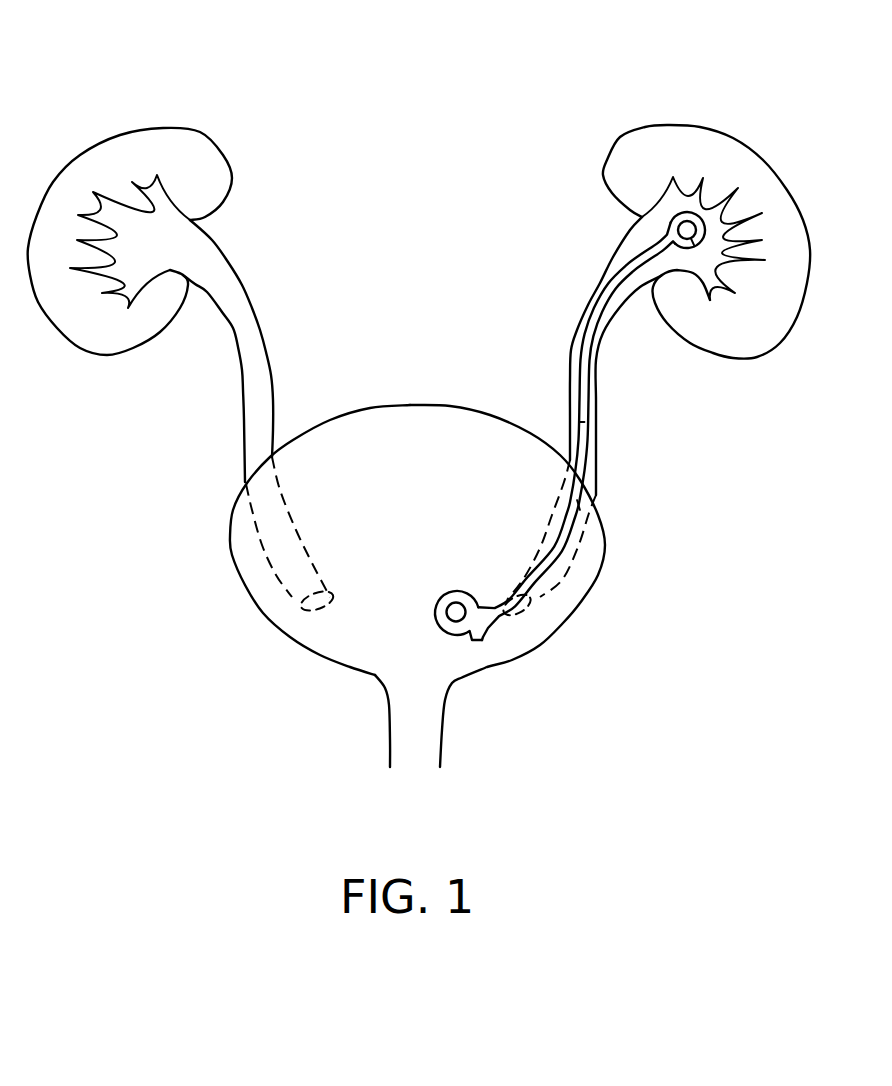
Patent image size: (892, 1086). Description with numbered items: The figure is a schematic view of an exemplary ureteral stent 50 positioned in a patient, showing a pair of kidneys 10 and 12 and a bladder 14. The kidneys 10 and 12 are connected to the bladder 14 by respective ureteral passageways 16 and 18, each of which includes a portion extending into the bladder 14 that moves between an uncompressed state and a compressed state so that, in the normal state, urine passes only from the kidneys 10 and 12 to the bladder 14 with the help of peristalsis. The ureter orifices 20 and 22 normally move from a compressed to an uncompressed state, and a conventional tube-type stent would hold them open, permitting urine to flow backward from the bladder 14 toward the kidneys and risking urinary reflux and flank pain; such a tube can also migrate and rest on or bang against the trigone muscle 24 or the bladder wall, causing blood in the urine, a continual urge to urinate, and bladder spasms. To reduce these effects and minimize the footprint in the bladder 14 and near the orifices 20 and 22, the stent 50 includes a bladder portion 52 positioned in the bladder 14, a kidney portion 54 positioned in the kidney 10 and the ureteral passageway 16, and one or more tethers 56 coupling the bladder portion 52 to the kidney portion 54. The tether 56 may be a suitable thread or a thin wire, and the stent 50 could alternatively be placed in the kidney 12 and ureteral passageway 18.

The kidney 10 is at (695, 127).
The kidney 12 is at (100, 143).
The bladder 14 is at (603, 552).
The ureteral passageway 16 is at (597, 387).
The ureteral passageway 18 is at (262, 330).
The ureter orifice 20 is at (533, 607).
The ureter orifice 22 is at (315, 605).
The trigone muscle 24 is at (387, 642).
The ureteral stent 50 is at (596, 409).
The bladder portion 52 is at (483, 653).
The kidney portion 54 is at (697, 257).
The tether 56 is at (579, 505).